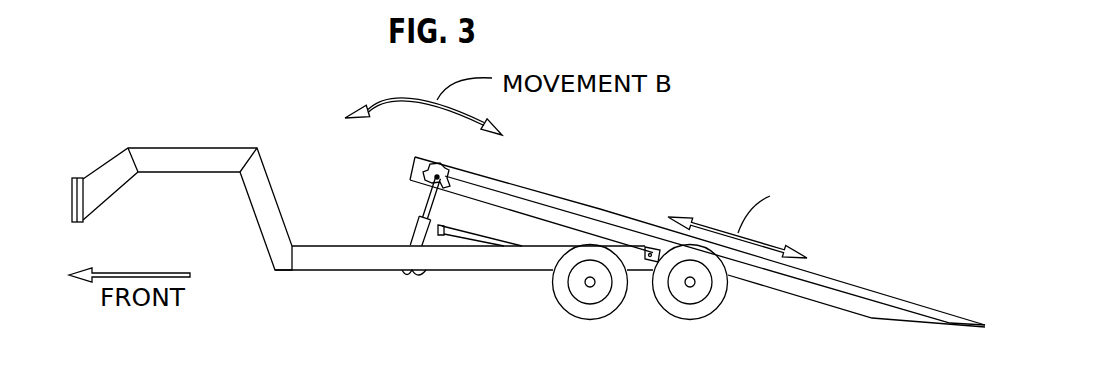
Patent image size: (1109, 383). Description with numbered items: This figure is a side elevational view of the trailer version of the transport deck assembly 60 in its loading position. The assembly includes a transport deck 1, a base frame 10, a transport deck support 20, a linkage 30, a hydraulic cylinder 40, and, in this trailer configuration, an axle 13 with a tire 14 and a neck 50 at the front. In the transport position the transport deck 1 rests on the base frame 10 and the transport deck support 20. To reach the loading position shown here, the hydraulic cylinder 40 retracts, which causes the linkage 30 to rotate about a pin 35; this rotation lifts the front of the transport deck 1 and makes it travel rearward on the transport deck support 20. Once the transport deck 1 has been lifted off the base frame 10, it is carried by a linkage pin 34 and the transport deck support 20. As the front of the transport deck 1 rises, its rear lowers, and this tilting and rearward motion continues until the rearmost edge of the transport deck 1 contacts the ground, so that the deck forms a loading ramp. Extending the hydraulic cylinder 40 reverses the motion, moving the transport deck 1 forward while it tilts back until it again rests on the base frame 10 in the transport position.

The transport deck 1 is at (605, 203).
The base frame 10 is at (346, 275).
The axle 13 is at (690, 285).
The tire 14 is at (575, 319).
The transport deck support 20 is at (648, 266).
The linkage 30 is at (412, 217).
The linkage pin 34 is at (438, 176).
The pin 35 is at (410, 274).
The hydraulic cylinder 40 is at (460, 237).
The neck 50 is at (160, 143).
The transport deck assembly 60 is at (703, 173).